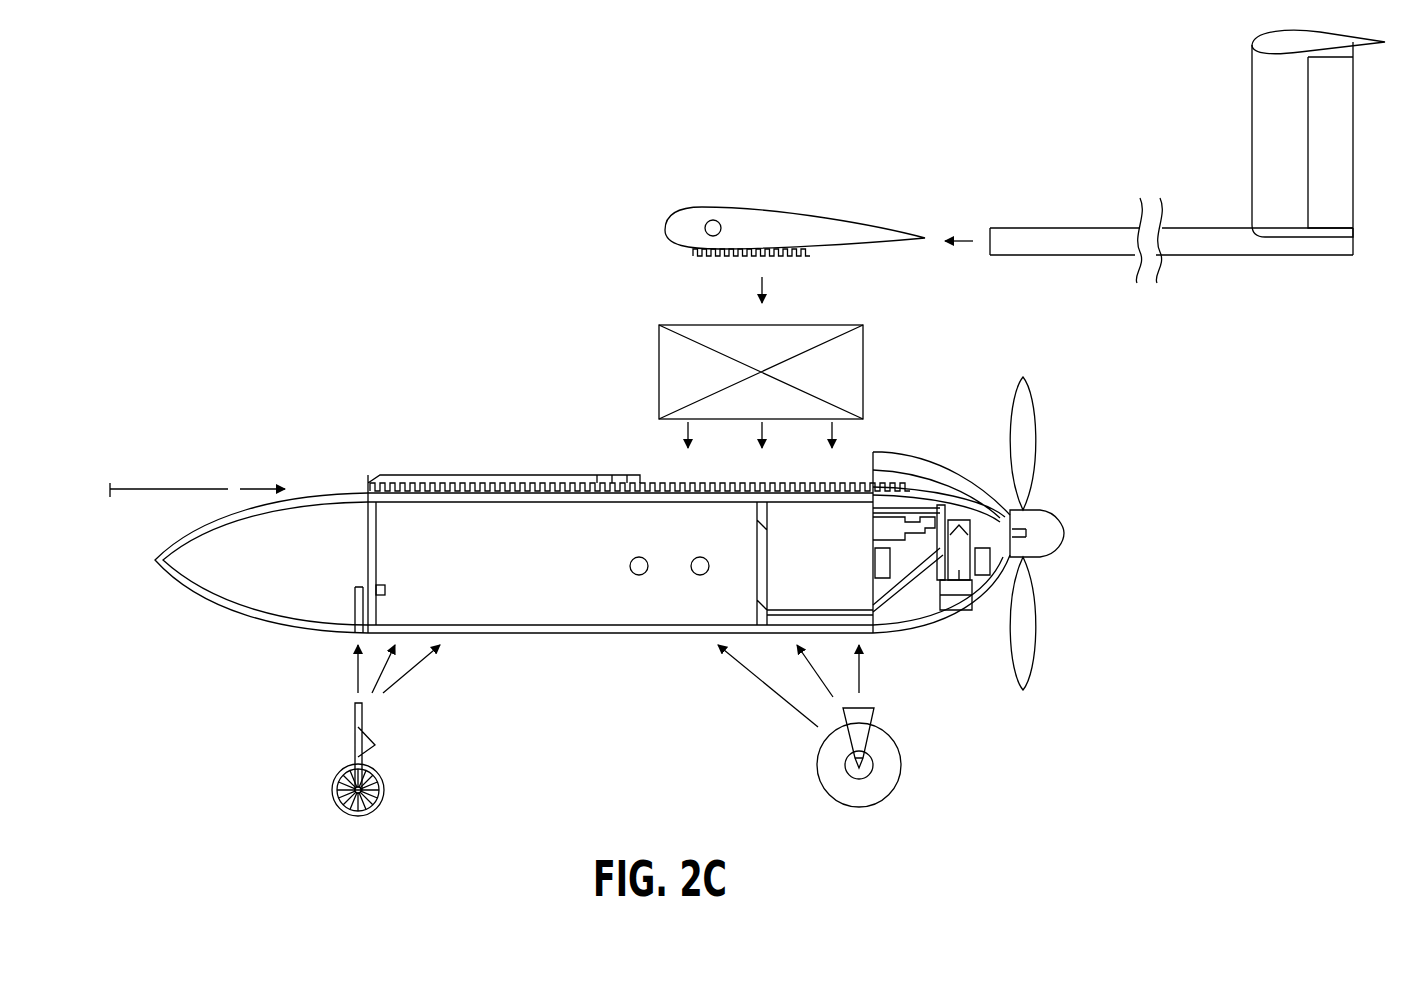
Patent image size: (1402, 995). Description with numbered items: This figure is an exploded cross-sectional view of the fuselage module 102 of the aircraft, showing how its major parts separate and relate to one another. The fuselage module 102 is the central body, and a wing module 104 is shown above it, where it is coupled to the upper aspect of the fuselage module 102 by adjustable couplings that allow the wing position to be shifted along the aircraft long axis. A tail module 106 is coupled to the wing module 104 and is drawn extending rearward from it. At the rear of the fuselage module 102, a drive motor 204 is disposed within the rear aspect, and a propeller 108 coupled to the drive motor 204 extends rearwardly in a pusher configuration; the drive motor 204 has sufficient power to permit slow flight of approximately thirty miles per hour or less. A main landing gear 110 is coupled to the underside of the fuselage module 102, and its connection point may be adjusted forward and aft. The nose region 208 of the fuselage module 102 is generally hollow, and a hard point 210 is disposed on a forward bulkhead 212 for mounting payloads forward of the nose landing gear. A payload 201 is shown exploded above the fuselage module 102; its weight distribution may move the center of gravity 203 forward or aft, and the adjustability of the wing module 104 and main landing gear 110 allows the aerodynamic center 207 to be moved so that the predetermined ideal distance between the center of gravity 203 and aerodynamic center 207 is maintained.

The fuselage module 102 is at (496, 632).
The wing module 104 is at (665, 226).
The tail module 106 is at (1030, 256).
The propeller 108 is at (1060, 540).
The main landing gear 110 is at (817, 765).
The payload 201 is at (864, 372).
The center of gravity 203 is at (637, 556).
The drive motor 204 is at (940, 612).
The aerodynamic center 207 is at (699, 556).
The nose region 208 is at (200, 605).
The hard point 210 is at (388, 590).
The forward bulkhead 212 is at (378, 543).